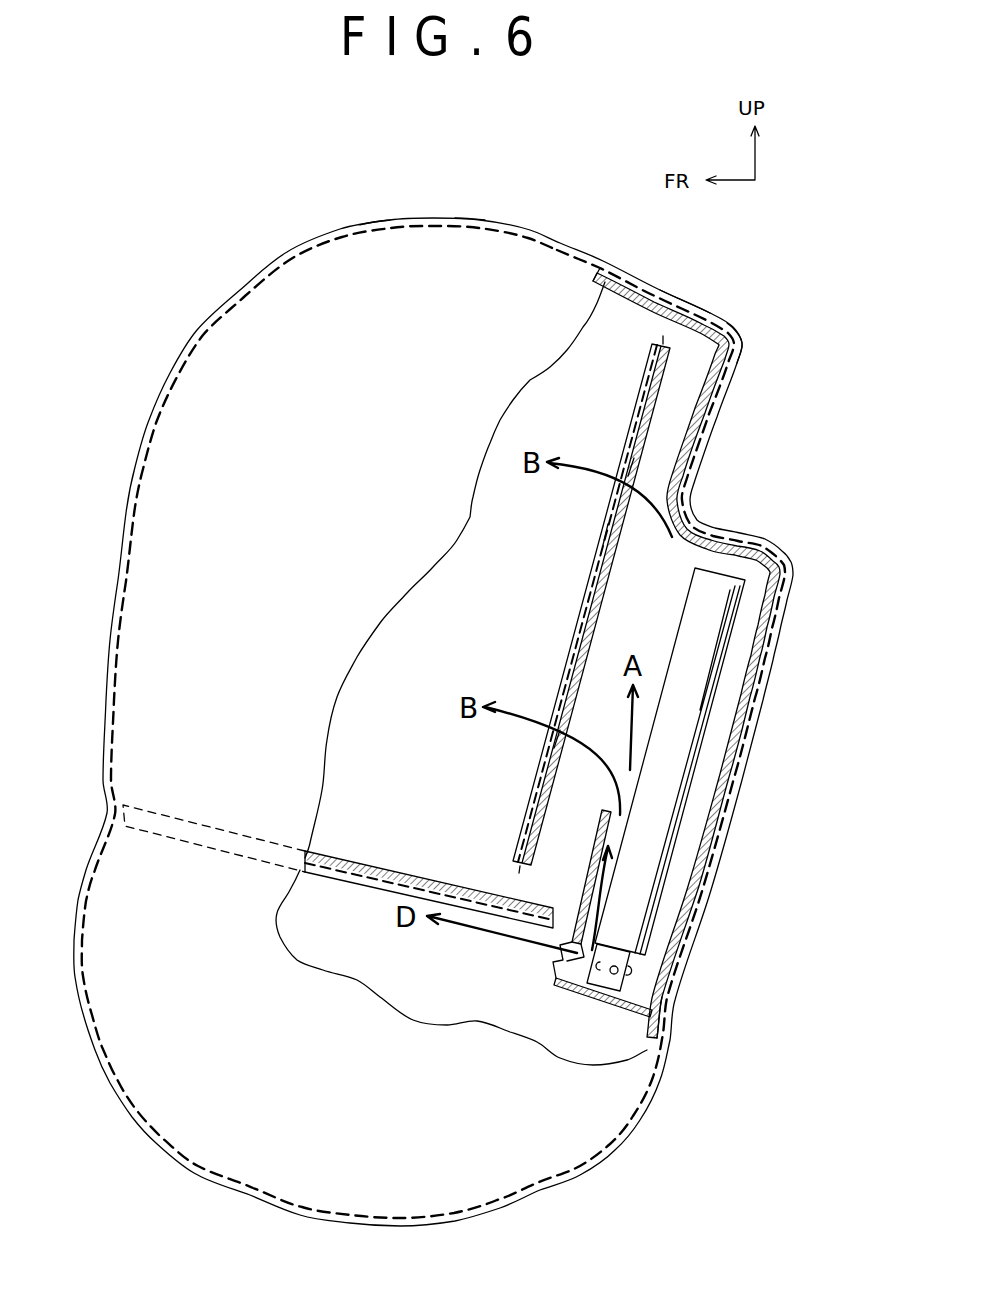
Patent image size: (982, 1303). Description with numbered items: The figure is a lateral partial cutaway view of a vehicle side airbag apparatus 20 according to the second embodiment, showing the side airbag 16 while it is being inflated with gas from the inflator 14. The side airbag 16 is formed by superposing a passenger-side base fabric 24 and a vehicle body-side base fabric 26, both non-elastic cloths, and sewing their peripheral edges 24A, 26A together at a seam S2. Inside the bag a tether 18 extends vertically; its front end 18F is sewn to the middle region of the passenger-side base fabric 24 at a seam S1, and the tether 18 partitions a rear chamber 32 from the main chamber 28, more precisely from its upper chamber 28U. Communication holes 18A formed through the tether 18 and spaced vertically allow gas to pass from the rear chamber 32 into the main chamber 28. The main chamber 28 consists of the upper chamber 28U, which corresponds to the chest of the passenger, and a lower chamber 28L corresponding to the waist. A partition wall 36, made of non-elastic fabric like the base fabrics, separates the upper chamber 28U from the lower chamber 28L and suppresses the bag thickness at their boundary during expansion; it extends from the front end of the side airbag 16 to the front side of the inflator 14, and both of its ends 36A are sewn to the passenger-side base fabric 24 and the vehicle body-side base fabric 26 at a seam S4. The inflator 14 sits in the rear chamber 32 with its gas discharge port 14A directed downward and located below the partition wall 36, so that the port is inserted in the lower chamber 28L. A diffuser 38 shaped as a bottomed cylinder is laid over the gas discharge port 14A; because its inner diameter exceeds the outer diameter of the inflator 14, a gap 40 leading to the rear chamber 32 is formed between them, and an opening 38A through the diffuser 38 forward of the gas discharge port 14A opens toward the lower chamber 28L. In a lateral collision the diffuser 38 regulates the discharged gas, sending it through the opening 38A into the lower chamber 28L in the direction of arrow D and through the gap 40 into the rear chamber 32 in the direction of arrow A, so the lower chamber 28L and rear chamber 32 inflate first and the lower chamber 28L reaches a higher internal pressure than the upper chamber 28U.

The inflator 14 is at (742, 780).
The gas discharge port 14A is at (660, 978).
The side airbag 16 is at (173, 339).
The tether 18 is at (603, 660).
The communication holes 18A is at (632, 463).
The front end of tether 18F is at (604, 534).
The vehicle side airbag apparatus 20 is at (230, 234).
The passenger-side base fabric 24 is at (758, 339).
The peripheral edge of passenger-side base fabric 24A is at (690, 302).
The vehicle body-side base fabric 26 is at (304, 269).
The peripheral edge of vehicle body-side base fabric 26A is at (382, 224).
The main chamber 28 is at (184, 558).
The upper chamber 28U is at (457, 653).
The lower chamber 28L is at (421, 976).
The rear chamber 32 is at (666, 601).
The partition wall 36 is at (381, 850).
The ends of partition wall 36A is at (305, 865).
The diffuser 38 is at (597, 832).
The opening of diffuser 38A is at (558, 962).
The gap 40 is at (708, 800).
The seam S1 is at (616, 496).
The seam S2 is at (470, 224).
The seam S4 is at (367, 882).